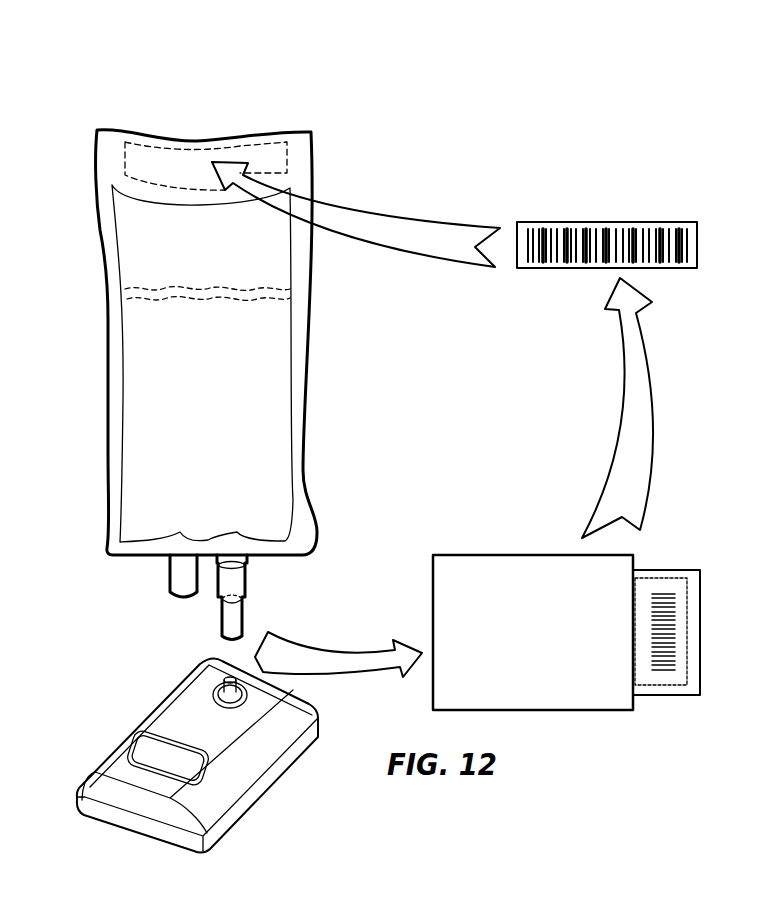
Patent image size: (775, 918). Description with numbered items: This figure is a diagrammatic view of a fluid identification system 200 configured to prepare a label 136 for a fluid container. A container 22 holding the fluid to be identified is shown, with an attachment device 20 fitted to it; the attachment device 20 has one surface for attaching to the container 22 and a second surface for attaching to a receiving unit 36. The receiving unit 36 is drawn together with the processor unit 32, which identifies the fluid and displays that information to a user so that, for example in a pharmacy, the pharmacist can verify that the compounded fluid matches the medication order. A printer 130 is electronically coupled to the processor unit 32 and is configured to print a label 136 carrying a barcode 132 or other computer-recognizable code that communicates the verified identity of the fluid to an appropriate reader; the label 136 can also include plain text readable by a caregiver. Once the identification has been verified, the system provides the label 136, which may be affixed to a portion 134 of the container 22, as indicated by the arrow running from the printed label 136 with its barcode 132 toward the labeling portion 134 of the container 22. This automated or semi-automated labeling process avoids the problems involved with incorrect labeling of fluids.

The attachment device 20 is at (247, 582).
The container 22 is at (307, 362).
The processor unit 32 is at (245, 807).
The receiving unit 36 is at (283, 772).
The printer 130 is at (487, 568).
The barcode 132 is at (672, 257).
The portion of container 134 is at (263, 150).
The label 136 is at (697, 232).
The fluid identification system 200 is at (563, 160).